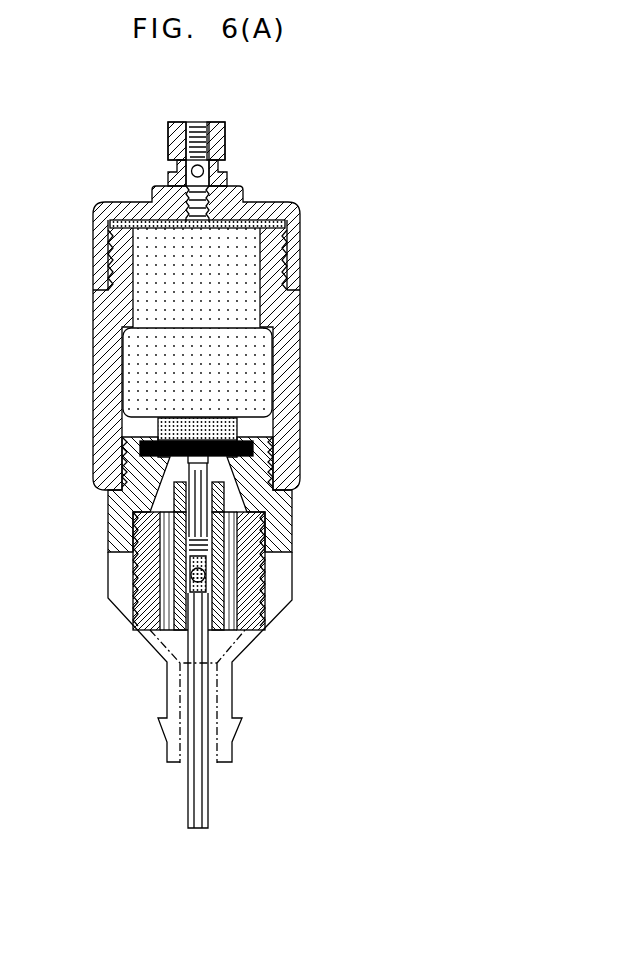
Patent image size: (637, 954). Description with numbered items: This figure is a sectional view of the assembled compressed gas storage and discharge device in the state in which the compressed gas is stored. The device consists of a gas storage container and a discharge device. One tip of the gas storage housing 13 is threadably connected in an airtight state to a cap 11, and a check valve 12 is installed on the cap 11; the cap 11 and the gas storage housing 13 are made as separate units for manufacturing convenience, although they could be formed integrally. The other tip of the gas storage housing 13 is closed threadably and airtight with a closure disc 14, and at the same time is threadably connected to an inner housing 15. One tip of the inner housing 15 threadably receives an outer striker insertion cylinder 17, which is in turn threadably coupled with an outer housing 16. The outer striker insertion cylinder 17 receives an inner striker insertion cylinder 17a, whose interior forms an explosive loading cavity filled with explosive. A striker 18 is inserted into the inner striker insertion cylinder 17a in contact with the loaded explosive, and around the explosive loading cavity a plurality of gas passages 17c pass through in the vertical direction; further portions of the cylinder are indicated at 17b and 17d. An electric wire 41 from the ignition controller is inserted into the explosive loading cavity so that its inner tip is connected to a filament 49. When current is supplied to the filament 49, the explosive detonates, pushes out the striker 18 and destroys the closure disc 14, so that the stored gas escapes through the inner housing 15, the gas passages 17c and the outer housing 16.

The cap 11 is at (302, 237).
The check valve 12 is at (227, 180).
The gas storage housing 13 is at (302, 325).
The closure disc 14 is at (243, 426).
The inner housing 15 is at (112, 510).
The outer housing 16 is at (115, 562).
The outer striker insertion cylinder 17 is at (258, 541).
The inner striker insertion cylinder 17a is at (262, 474).
The valve seat portion 17b is at (208, 594).
The gas passages 17c is at (133, 618).
The passage 17d is at (173, 573).
The striker 18 is at (200, 512).
The electric wire 41 is at (208, 683).
The filament 49 is at (212, 604).